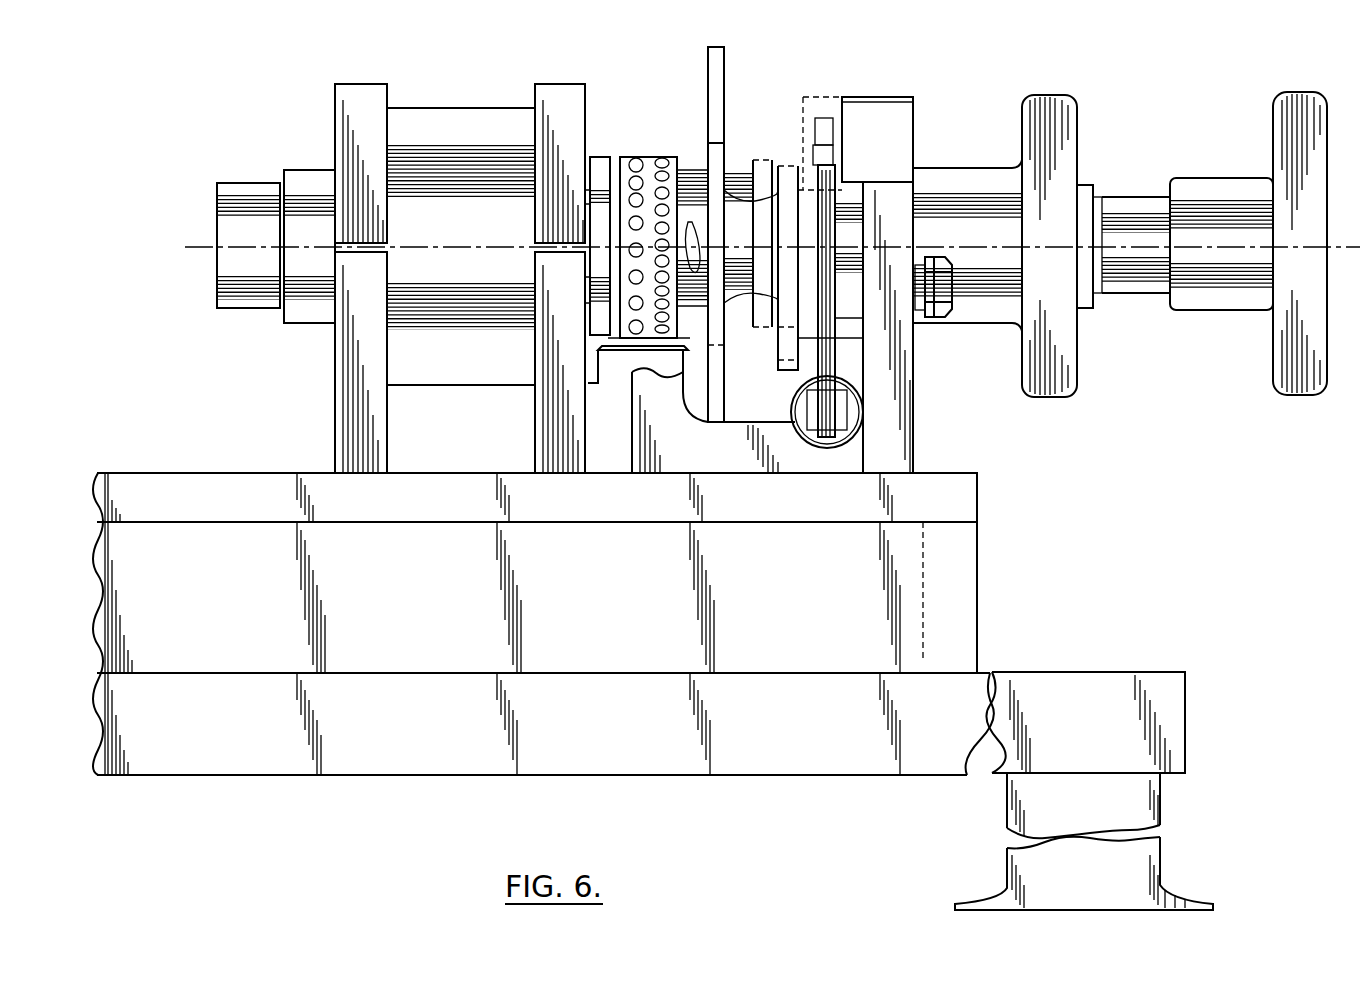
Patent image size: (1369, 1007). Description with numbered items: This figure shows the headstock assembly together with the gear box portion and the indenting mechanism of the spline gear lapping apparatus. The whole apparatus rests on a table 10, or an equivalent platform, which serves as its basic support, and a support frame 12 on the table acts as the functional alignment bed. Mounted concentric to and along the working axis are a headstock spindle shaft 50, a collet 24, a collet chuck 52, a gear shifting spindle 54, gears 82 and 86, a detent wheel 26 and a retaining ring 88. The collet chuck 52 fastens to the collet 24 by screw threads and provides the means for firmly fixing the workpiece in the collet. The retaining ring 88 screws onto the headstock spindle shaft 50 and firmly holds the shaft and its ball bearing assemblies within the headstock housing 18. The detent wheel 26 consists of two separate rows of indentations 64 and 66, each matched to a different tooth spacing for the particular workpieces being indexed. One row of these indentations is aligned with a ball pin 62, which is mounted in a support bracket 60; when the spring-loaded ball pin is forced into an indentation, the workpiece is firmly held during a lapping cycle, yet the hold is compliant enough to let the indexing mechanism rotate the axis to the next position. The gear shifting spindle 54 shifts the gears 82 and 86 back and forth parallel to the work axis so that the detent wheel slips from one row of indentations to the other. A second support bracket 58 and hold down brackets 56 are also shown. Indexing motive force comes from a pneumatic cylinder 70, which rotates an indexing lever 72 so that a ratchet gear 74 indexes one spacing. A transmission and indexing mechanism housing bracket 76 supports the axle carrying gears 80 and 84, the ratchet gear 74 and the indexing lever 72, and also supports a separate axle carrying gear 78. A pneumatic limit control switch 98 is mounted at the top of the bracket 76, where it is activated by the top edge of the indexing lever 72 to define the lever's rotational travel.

The table 10 is at (1185, 718).
The support frame 12 is at (978, 540).
The headstock housing 18 is at (483, 386).
The collet 24 is at (217, 206).
The detent wheel 26 is at (690, 173).
The headstock spindle shaft 50 is at (300, 325).
The collet chuck 52 is at (1306, 92).
The gear shifting spindle 54 is at (1038, 95).
The hold down brackets 56 is at (361, 84).
The support bracket 58 is at (338, 396).
The support bracket 60 is at (590, 437).
The ball pin 62 is at (597, 342).
The row of indentations 64 is at (636, 157).
The row of indentations 66 is at (662, 157).
The pneumatic cylinder 70 is at (863, 403).
The indexing lever 72 is at (835, 360).
The ratchet gear 74 is at (810, 305).
The transmission and indexing mechanism housing bracket 76 is at (917, 452).
The gear 78 is at (791, 371).
The gear 80 is at (790, 166).
The gear 82 is at (762, 160).
The gear 84 is at (714, 143).
The gear 86 is at (716, 47).
The retaining ring 88 is at (601, 157).
The pneumatic limit control switch 98 is at (870, 97).